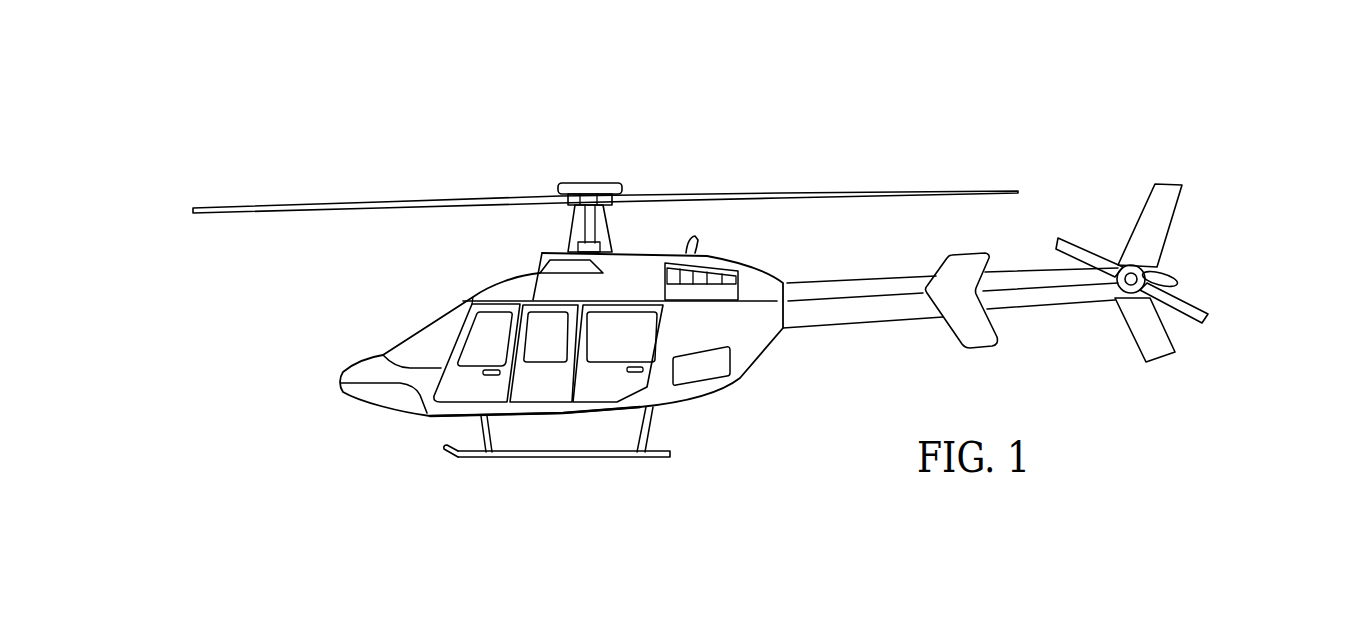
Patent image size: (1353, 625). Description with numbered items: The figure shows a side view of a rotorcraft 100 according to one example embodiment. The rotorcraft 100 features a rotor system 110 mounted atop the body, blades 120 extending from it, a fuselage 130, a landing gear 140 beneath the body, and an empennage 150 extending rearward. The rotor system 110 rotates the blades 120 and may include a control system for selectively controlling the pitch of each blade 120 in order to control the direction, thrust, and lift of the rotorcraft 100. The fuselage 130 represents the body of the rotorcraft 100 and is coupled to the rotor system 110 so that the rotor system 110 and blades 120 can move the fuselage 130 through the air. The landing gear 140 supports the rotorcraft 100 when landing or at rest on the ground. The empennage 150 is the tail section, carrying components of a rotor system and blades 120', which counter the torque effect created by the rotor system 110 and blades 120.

The rotorcraft 100 is at (438, 139).
The rotor system 110 is at (590, 183).
The blades 120 is at (605, 171).
The blades 120' is at (1172, 273).
The fuselage 130 is at (380, 411).
The landing gear 140 is at (533, 460).
The empennage 150 is at (863, 323).